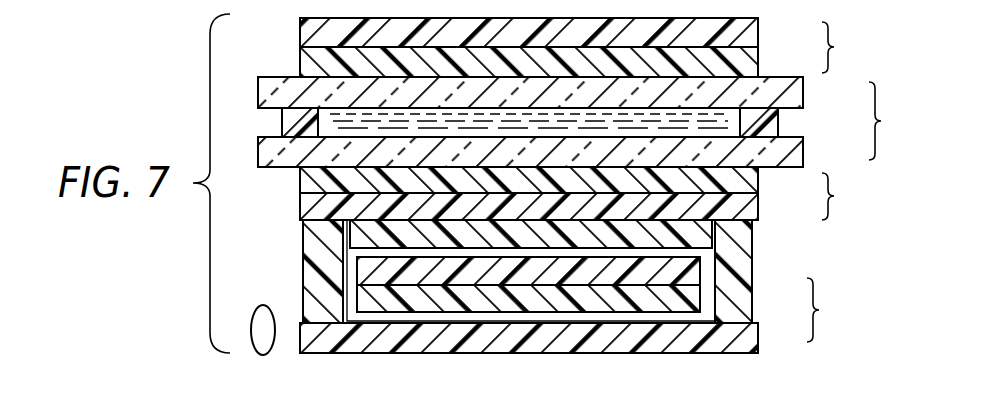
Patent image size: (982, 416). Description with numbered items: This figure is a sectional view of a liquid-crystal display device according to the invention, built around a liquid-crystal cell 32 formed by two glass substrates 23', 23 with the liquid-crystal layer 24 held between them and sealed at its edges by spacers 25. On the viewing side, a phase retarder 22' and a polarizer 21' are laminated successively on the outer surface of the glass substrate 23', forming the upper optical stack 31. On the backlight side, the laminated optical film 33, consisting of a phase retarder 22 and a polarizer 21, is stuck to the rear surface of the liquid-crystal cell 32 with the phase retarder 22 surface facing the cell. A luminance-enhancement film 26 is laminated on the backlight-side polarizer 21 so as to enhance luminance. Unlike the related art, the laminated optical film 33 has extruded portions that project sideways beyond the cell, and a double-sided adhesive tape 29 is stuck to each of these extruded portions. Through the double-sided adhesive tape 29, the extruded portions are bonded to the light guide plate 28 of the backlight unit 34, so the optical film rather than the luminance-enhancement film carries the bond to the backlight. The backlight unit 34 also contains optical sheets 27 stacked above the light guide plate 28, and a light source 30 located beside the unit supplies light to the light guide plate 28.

The polarizer 21' is at (567, 31).
The phase retarder 22' is at (567, 61).
The upper laminate 31 is at (845, 47).
The glass substrate 23' is at (567, 92).
The spacer / seal 25 is at (290, 118).
The liquid crystal layer 24 is at (322, 134).
The liquid-crystal cell 32 is at (893, 121).
The glass substrate 23 is at (564, 151).
The phase retarder 22 is at (563, 182).
The polarizer 21 is at (563, 207).
The laminated optical film 33 is at (845, 196).
The double-sided adhesive tape 29 is at (322, 316).
The luminance-enhancement film 26 is at (697, 241).
The backlight layers 27 is at (700, 270).
The light guide plate 28 is at (745, 341).
The backlight unit 34 is at (830, 310).
The light source 30 is at (261, 345).